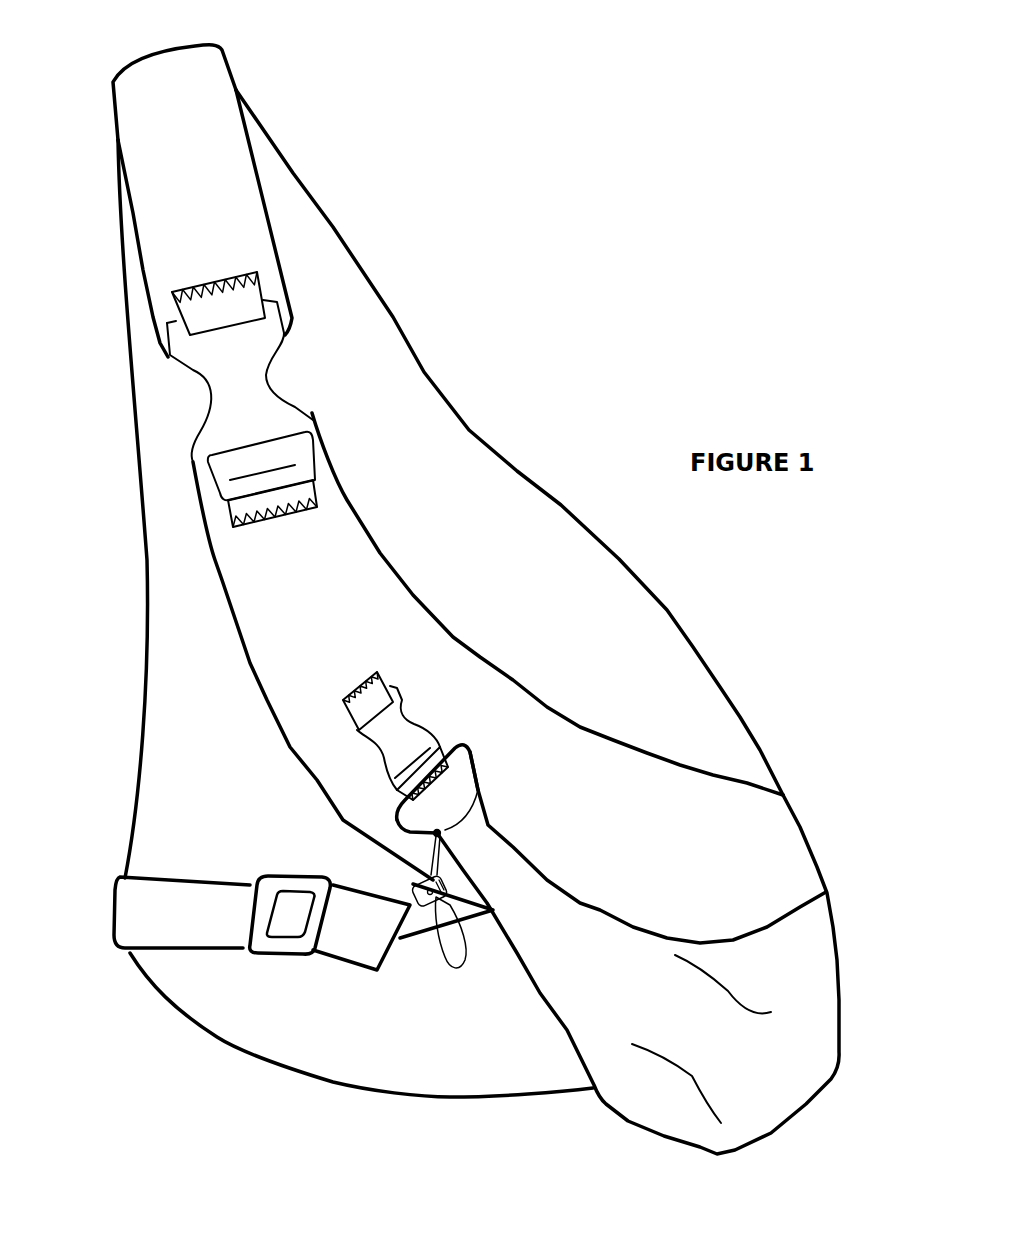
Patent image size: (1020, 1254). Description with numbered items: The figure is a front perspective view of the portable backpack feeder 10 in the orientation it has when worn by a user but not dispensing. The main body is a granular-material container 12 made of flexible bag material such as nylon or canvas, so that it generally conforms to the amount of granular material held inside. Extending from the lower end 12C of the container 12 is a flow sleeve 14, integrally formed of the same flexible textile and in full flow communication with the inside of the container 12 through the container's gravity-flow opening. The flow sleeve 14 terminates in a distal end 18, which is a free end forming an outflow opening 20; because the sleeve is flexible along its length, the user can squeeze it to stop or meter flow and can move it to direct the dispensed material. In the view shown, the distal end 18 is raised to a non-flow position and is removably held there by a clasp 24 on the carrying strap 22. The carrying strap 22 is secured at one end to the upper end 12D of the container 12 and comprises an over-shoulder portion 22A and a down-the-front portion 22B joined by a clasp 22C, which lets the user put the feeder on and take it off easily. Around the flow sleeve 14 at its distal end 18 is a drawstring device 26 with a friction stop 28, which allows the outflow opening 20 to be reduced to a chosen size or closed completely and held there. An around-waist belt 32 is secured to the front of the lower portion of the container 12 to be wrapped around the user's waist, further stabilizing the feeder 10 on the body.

The portable backpack feeder 10 is at (505, 372).
The granular-material container 12 is at (650, 627).
The lower end of container 12C is at (290, 1043).
The upper end of container 12D is at (292, 177).
The flow sleeve 14 is at (563, 998).
The distal end of flow sleeve 18 is at (488, 825).
The outflow opening 20 is at (410, 810).
The carrying strap 22 is at (160, 270).
The over-shoulder portion 22A is at (188, 73).
The down-the-front portion 22B is at (232, 545).
The clasp 22C is at (230, 375).
The clasp 24 is at (362, 725).
The drawstring device 26 is at (440, 965).
The friction stop 28 is at (397, 878).
The around-waist belt 32 is at (157, 903).